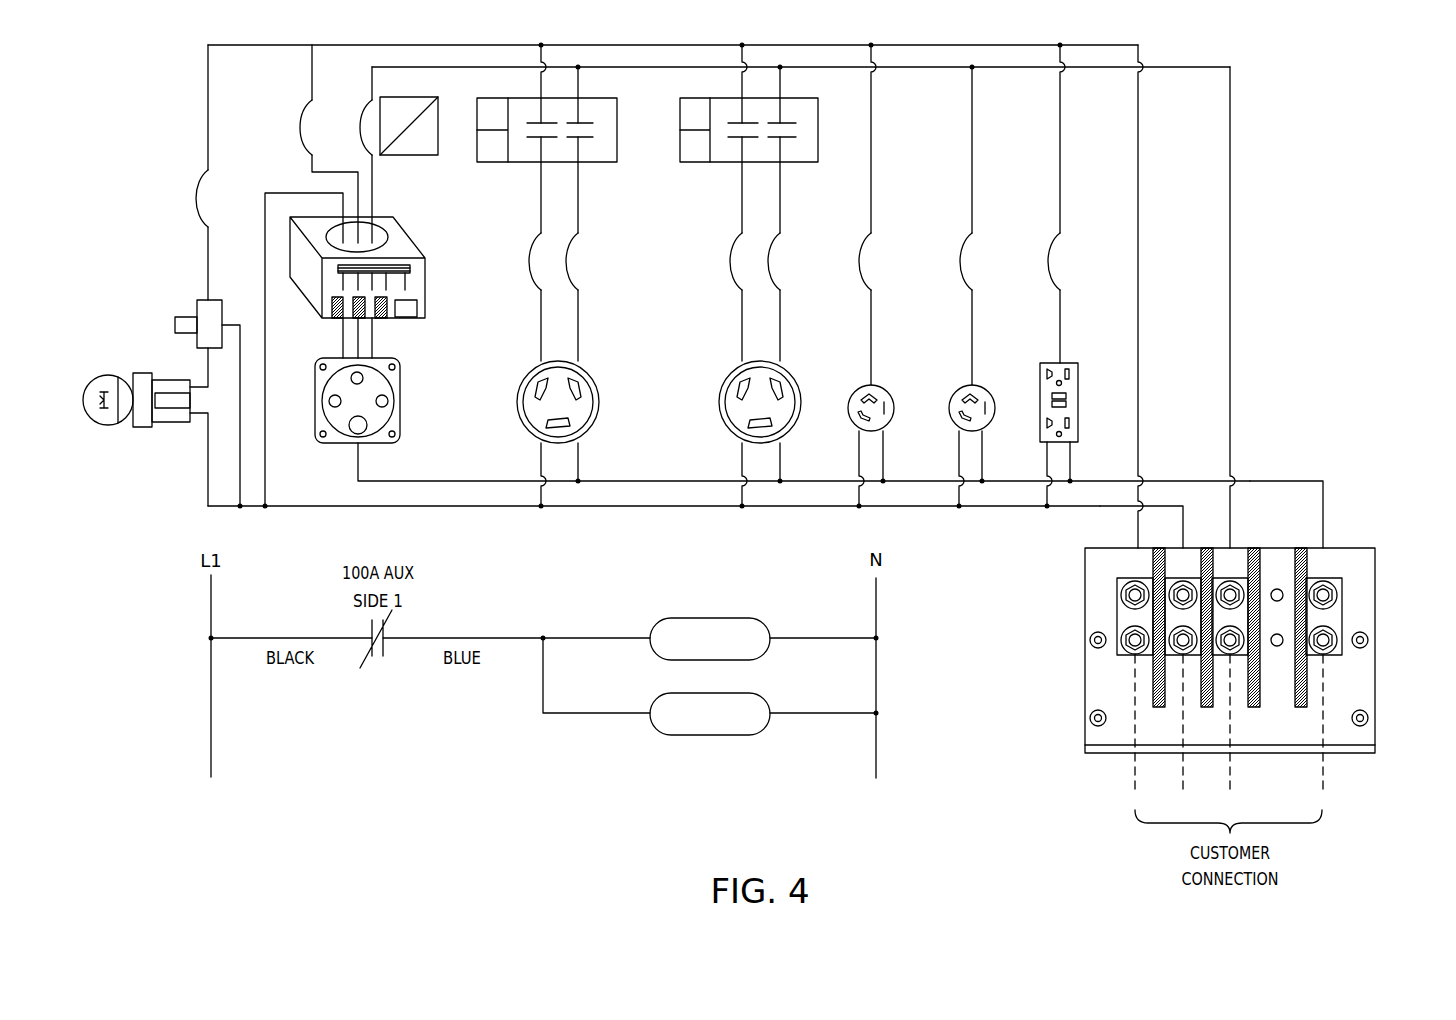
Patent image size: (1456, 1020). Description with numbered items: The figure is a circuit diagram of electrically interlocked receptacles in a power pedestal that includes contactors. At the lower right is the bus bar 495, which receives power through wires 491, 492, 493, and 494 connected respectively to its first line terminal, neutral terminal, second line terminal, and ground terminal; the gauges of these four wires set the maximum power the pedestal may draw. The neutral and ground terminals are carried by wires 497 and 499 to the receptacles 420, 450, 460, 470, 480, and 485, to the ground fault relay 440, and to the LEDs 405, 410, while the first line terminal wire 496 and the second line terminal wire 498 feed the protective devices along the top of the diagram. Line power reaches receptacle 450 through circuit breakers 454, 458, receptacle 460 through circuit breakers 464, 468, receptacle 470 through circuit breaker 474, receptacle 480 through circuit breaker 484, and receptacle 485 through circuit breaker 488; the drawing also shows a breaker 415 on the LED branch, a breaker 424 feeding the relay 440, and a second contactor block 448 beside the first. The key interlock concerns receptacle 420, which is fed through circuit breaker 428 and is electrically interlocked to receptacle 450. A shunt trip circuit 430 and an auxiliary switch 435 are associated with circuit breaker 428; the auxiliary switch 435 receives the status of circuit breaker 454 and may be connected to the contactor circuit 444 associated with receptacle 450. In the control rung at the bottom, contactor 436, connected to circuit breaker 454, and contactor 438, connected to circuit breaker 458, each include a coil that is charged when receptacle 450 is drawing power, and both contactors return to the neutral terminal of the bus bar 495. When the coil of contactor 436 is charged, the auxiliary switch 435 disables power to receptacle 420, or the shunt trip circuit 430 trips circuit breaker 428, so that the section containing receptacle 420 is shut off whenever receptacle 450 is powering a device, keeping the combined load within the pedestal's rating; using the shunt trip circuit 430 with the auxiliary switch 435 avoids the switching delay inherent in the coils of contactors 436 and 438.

The LED 405 is at (113, 376).
The LED 410 is at (197, 304).
The 20A circuit breaker 415 is at (208, 176).
The receptacle 420 is at (400, 402).
The 100A circuit breaker 424 is at (312, 104).
The circuit breaker 428 is at (372, 104).
The shunt trip circuit 430 is at (420, 98).
The auxiliary switch 435 is at (438, 132).
The contactor 436 is at (710, 618).
The contactor 438 is at (710, 735).
The ground fault relay 440 is at (425, 292).
The contactor circuit 444 is at (600, 98).
The contactor 448 is at (795, 98).
The receptacle 450 is at (592, 376).
The circuit breaker 454 is at (541, 236).
The circuit breaker 458 is at (568, 262).
The receptacle 460 is at (745, 378).
The circuit breaker 464 is at (742, 236).
The circuit breaker 468 is at (771, 268).
The receptacle 470 is at (884, 390).
The circuit breaker 474 is at (871, 236).
The receptacle 480 is at (984, 390).
The circuit breaker 484 is at (972, 236).
The receptacle 485 is at (1080, 380).
The circuit breaker 488 is at (1060, 236).
The wire 491 is at (1135, 765).
The wire 492 is at (1183, 765).
The wire 493 is at (1230, 765).
The wire 494 is at (1323, 765).
The bus bar 495 is at (1375, 602).
The L1 conductor 496 is at (1138, 542).
The wire 497 is at (1183, 533).
The L2 conductor 498 is at (1230, 450).
The wire 499 is at (1323, 522).